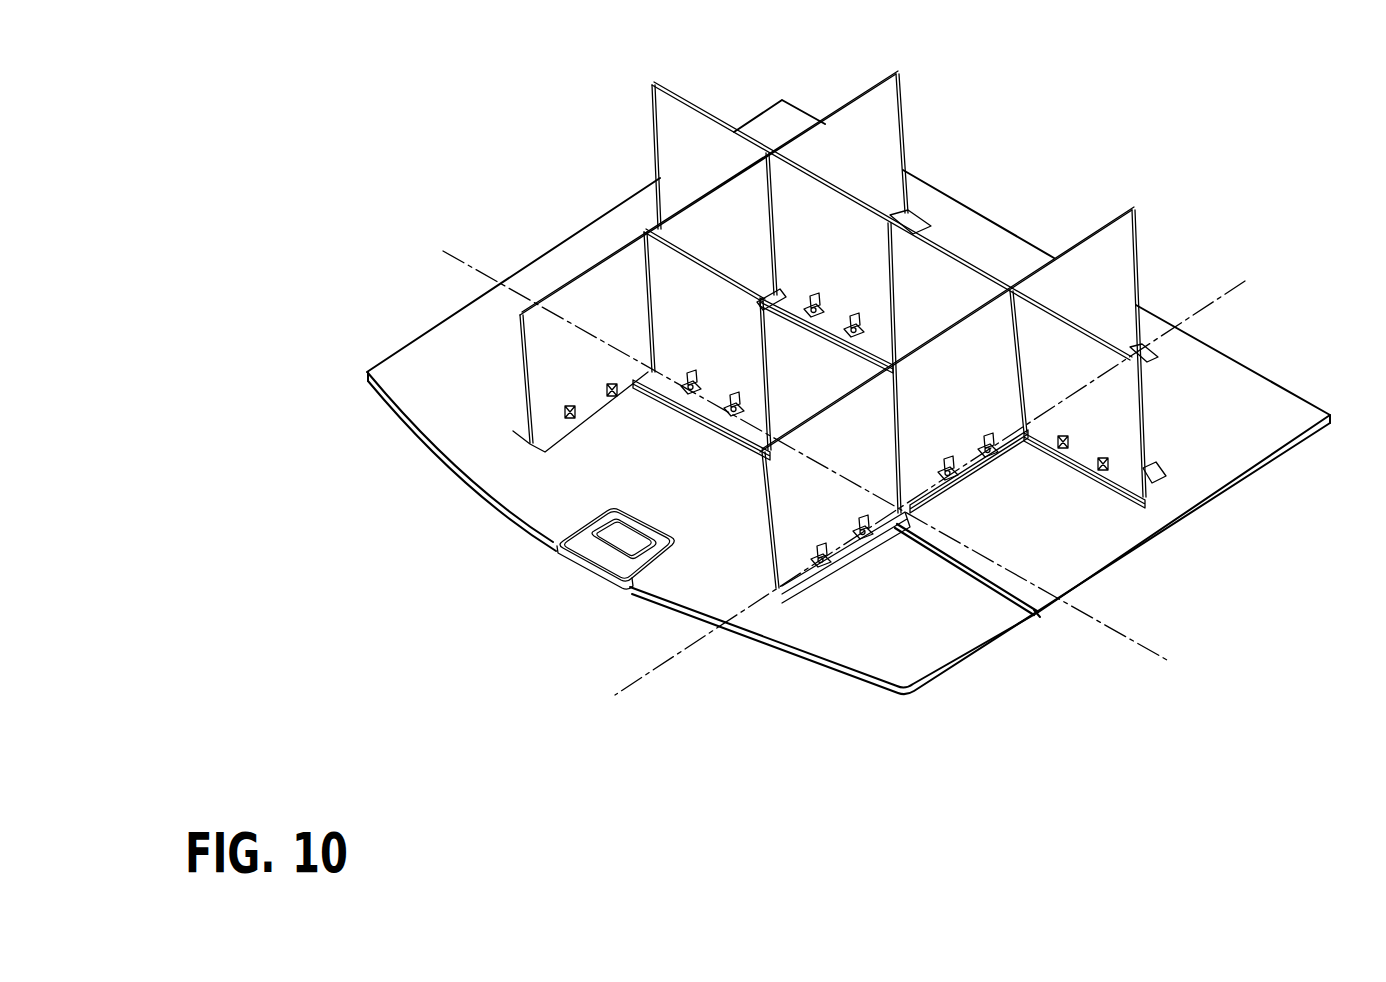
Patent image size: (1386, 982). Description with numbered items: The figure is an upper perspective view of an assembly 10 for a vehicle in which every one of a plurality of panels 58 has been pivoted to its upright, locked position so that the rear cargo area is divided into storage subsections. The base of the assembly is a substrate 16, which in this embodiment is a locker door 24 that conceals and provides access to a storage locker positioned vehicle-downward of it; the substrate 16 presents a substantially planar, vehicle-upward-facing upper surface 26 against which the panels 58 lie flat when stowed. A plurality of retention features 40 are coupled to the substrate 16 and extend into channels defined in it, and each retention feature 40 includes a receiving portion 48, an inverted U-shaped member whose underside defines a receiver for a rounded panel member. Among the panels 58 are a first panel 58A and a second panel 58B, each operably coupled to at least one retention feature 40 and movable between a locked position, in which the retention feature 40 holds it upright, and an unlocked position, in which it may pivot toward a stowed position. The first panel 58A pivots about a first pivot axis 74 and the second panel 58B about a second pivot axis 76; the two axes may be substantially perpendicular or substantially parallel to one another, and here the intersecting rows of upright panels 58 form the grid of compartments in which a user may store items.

The assembly 10 is at (1032, 119).
The substrate 16 is at (1213, 450).
The locker door 24 is at (669, 565).
The upper surface 26 is at (1058, 530).
The retention feature 40 is at (733, 398).
The receiving portion 48 is at (822, 567).
The panel 58 is at (839, 329).
The first panel 58A is at (787, 530).
The second panel 58B is at (742, 402).
The first pivot axis 74 is at (1220, 295).
The second pivot axis 76 is at (443, 250).